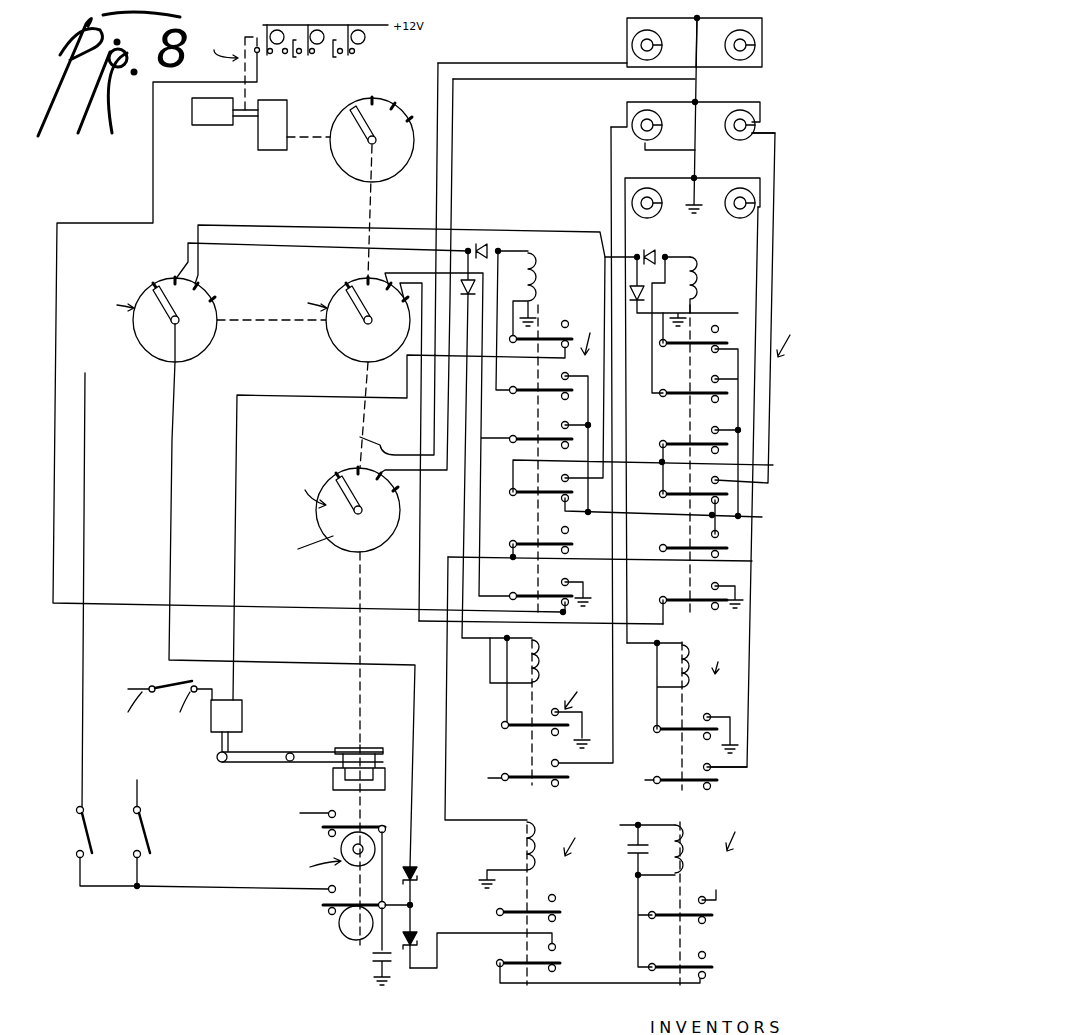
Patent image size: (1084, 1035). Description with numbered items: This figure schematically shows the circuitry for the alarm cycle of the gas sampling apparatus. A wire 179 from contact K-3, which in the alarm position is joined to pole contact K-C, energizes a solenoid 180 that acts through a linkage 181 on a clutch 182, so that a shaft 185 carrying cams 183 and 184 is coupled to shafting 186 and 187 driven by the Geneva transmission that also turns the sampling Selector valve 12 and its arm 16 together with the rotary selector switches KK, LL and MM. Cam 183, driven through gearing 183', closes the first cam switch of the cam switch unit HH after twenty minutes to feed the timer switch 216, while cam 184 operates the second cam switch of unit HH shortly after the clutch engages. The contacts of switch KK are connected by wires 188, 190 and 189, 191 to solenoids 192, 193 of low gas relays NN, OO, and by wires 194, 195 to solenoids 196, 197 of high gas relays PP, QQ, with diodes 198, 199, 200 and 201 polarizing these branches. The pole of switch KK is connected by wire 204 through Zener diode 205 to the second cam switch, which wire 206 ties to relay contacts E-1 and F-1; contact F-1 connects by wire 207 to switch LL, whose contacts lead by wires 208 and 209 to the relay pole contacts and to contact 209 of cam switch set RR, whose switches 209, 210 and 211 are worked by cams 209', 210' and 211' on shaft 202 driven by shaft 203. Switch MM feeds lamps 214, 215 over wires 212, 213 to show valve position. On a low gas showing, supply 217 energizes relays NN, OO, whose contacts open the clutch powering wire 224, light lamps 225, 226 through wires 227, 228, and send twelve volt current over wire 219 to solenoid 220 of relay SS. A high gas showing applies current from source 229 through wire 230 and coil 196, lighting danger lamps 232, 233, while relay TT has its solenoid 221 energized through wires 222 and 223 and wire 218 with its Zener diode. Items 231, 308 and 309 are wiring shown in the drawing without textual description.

The sampling Selector valve 12 is at (380, 90).
The selector valve arm 16 is at (372, 187).
The wire 179 is at (213, 683).
The solenoid 180 is at (244, 712).
The linkage 181 is at (247, 764).
The clutch 182 is at (347, 741).
The cam 183 is at (319, 857).
The gearing 183' is at (314, 848).
The cam 184 is at (340, 927).
The shaft 185 is at (357, 873).
The shafting 186 is at (366, 198).
The shafting 187 is at (308, 137).
The contact wire 188 is at (220, 245).
The contact wire 189 is at (232, 225).
The wire 190 is at (538, 250).
The wire 191 is at (637, 257).
The solenoid 192 is at (650, 291).
The solenoid 193 is at (703, 281).
The wire 194 is at (473, 642).
The wire 195 is at (643, 647).
The solenoid 196 is at (540, 656).
The solenoid 197 is at (692, 675).
The diode semi-conductor 198 is at (483, 242).
The diode semi-conductor 199 is at (478, 287).
The diode 200 is at (656, 251).
The diode 201 is at (626, 284).
The shaft 202 is at (314, 57).
The shaft 203 is at (243, 128).
The wire 204 is at (172, 440).
The Zener type semi-conductor diode 205 is at (420, 870).
The wire 206 is at (228, 890).
The wire 207 is at (86, 592).
The wire 208 is at (152, 180).
The cam switch 209 is at (268, 73).
The cam 209' is at (245, 28).
The cam switch 210 is at (354, 72).
The cam 210' is at (288, 27).
The cam switch 211 is at (408, 47).
The cam 211' is at (347, 27).
The wire 212 is at (358, 437).
The wire 213 is at (437, 478).
The lamp 214 is at (652, 60).
The lamp 215 is at (740, 60).
The self-heating timer switch 216 is at (300, 812).
The positive D.C. supply 217 is at (140, 885).
The wire 218 is at (437, 968).
The wire / Zener semi-conductor diode 219 is at (420, 937).
The solenoid 220 is at (542, 852).
The solenoid 221 is at (690, 850).
The wire 222 is at (636, 905).
The wire 223 is at (603, 983).
The powering wire 224 is at (238, 601).
The low gas signal lamp 225 is at (652, 142).
The low gas signal lamp 226 is at (735, 138).
The energizing wire 227 is at (611, 150).
The energizing wire 228 is at (780, 150).
The positive current source 229 is at (753, 525).
The wire 230 is at (497, 686).
The relay contact 231 is at (580, 772).
The danger signal lamp 232 is at (660, 215).
The danger signal lamp 233 is at (738, 220).
The conductor 308 is at (392, 274).
The conductor 309 is at (420, 412).
The rotary selector switch KK is at (151, 319).
The second rotary selector switch LL is at (344, 319).
The third rotary selector switch MM is at (329, 510).
The auxiliary low gas relay NN is at (657, 437).
The auxiliary low gas relay OO is at (735, 464).
The auxiliary high gas relay PP is at (565, 712).
The auxiliary high gas relay QQ is at (676, 722).
The additional low gas sensitive relay SS is at (542, 899).
The additional high gas sensitive relay TT is at (696, 897).
The cam switches HH is at (318, 845).
The second cam switch set RR is at (221, 46).
The high gas sensing relay contact F-1 is at (64, 832).
The low gas sensing relay contact E-1 is at (160, 819).
The pole contact of switch H K-C is at (140, 711).
The contact of switch H K-3 is at (183, 711).